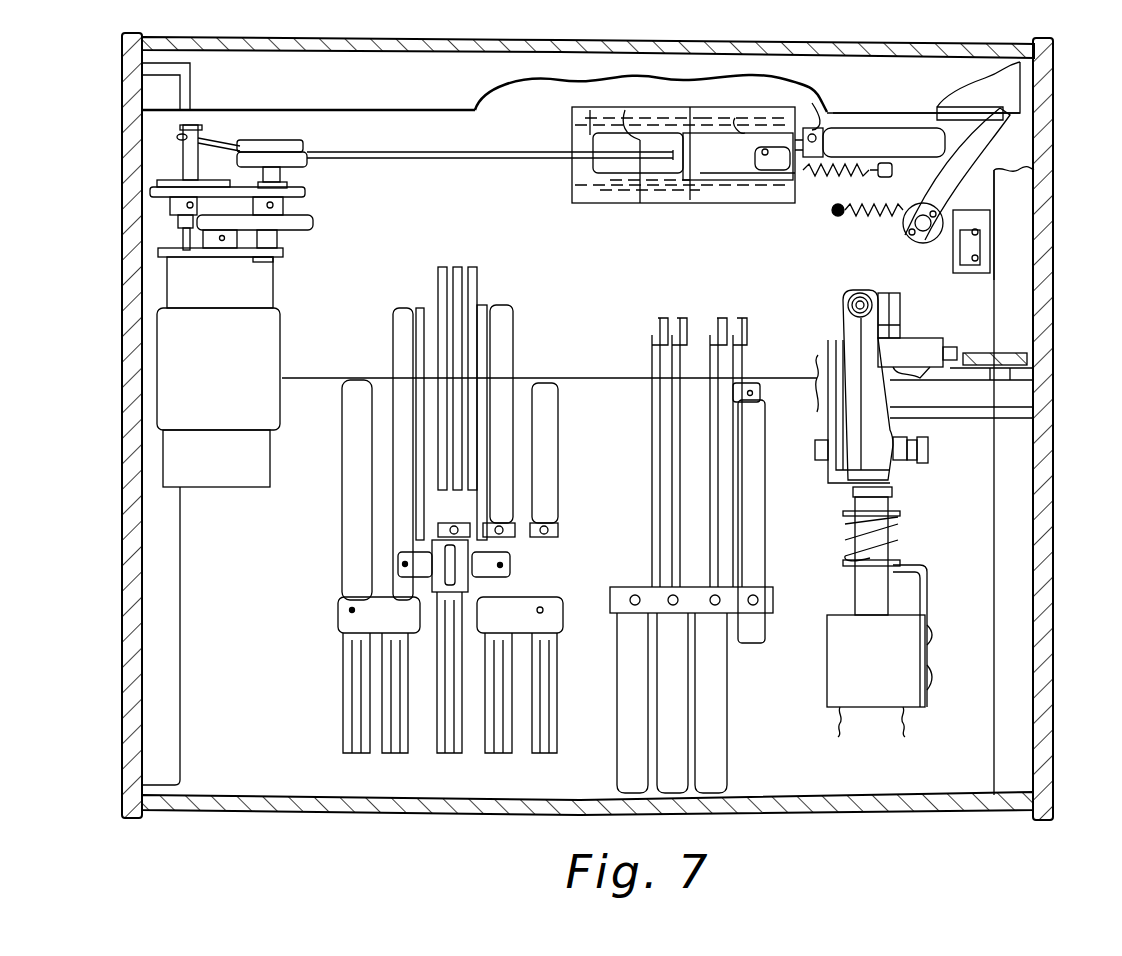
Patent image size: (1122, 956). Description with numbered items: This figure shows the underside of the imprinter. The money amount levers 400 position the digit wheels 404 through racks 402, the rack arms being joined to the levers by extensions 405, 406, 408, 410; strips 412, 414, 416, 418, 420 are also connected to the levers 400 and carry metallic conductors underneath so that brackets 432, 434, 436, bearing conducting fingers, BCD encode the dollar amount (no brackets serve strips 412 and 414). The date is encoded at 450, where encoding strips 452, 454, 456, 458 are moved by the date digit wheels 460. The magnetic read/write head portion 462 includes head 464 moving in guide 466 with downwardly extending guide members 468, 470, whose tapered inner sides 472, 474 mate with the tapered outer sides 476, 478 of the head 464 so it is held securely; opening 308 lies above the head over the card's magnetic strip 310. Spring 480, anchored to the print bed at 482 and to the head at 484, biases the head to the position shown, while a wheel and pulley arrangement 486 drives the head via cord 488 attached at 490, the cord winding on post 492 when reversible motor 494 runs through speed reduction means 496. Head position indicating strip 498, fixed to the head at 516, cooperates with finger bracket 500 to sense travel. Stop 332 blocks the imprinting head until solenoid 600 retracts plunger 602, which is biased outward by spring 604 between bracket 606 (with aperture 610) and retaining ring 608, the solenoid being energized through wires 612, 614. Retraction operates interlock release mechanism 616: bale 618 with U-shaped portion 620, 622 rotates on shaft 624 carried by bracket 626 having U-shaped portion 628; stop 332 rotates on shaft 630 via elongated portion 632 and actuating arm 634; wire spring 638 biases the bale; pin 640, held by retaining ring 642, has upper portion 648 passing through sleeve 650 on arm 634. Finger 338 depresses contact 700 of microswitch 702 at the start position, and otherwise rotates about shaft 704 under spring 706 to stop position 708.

The opening 308 is at (630, 118).
The magnetic strip 310 is at (585, 172).
The stop 332 is at (1034, 368).
The finger 338 is at (987, 140).
The levers 400 is at (274, 619).
The racks 402 is at (480, 318).
The digit wheels 404 is at (479, 231).
The extension 405 is at (345, 633).
The extension 406 is at (398, 563).
The extension 408 is at (510, 560).
The extension 410 is at (555, 633).
The strip 412 is at (358, 380).
The strip 414 is at (393, 332).
The strip 416 is at (500, 490).
The strip 418 is at (487, 450).
The strip 420 is at (558, 475).
The bracket 432 is at (499, 523).
The bracket 434 is at (454, 523).
The bracket 436 is at (550, 523).
The date strip and finger brackets 450 is at (705, 636).
The encoding strip 452 is at (630, 799).
The encoding strip 454 is at (675, 799).
The encoding strip 456 is at (727, 799).
The encoding strip 458 is at (765, 634).
The digit wheels 460 is at (683, 202).
The magnetic read/write head portion 462 is at (712, 118).
The head 464 is at (690, 107).
The guide 466 is at (593, 138).
The guide member 468 is at (585, 110).
The guide member 470 is at (595, 200).
The inner side 472 is at (605, 110).
The inner side 474 is at (625, 203).
The outer side 476 is at (745, 125).
The outer side 478 is at (700, 190).
The spring 480 is at (830, 190).
The spring securing means 482 is at (870, 142).
The spring attachment point 484 is at (768, 170).
The wheel and pulley arrangement 486 is at (270, 140).
The cord 488 is at (455, 152).
The cord attachment point 490 is at (648, 203).
The post 492 is at (183, 148).
The motor 494 is at (218, 372).
The speed reduction means 496 is at (168, 207).
The head position indicating strip 498 is at (850, 128).
The finger bracket 500 is at (812, 110).
The strip securing point 516 is at (738, 156).
The solenoid 600 is at (876, 602).
The plunger 602 is at (890, 590).
The spring 604 is at (845, 530).
The bracket 606 is at (935, 672).
The retaining ring 608 is at (900, 514).
The aperture 610 is at (843, 566).
The wire 612 is at (825, 740).
The wire 614 is at (905, 737).
The interlock release mechanism 616 is at (836, 385).
The bale 618 is at (858, 335).
The U-shaped portion 620 is at (905, 440).
The U-shaped portion 622 is at (836, 470).
The shaft 624 is at (928, 449).
The bracket 626 is at (845, 430).
The U-shaped portion 628 is at (893, 480).
The shaft 630 is at (957, 352).
The elongated portion 632 is at (912, 345).
The actuating arm 634 is at (893, 330).
The wire spring 638 is at (805, 358).
The pin 640 is at (856, 292).
The retaining ring 642 is at (851, 303).
The upper portion 648 is at (900, 318).
The sleeve 650 is at (900, 300).
The contact 700 is at (990, 215).
The microswitch 702 is at (960, 210).
The shaft 704 is at (905, 236).
The spring 706 is at (885, 215).
The stop position 708 is at (878, 172).